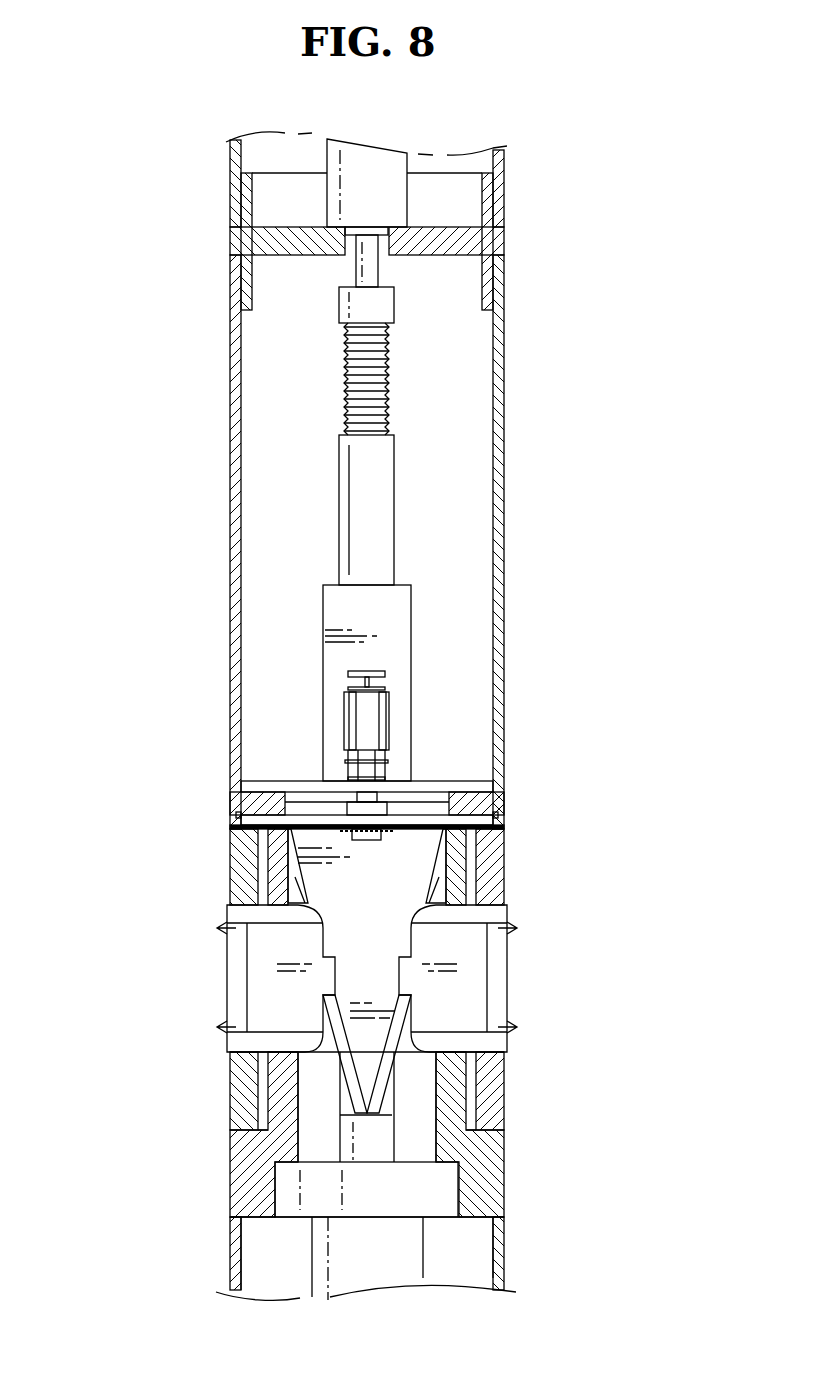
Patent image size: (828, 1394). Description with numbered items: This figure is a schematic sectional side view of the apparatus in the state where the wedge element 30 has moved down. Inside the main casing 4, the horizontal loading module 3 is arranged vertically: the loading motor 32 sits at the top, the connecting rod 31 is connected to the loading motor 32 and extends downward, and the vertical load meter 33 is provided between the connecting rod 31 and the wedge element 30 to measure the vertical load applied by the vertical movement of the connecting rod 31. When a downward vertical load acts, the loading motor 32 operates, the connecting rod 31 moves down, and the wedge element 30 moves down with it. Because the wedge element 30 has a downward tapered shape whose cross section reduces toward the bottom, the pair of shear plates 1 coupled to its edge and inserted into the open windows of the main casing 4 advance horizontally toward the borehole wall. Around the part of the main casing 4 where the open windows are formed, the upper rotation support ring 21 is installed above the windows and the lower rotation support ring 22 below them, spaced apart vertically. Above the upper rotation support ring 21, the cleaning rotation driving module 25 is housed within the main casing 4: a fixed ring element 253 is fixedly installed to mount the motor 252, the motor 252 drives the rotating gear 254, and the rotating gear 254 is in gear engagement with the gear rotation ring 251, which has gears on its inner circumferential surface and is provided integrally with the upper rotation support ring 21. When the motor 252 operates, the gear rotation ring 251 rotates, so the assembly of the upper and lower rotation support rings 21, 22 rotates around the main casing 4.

The shear plate 1 is at (236, 975).
The horizontal loading module 3 is at (122, 845).
The main casing 4 is at (500, 475).
The upper rotation support ring 21 is at (232, 880).
The lower rotation support ring 22 is at (238, 1085).
The cleaning rotation driving module 25 is at (606, 670).
The wedge element 30 is at (290, 850).
The connecting rod 31 is at (349, 474).
The loading motor 32 is at (340, 183).
The vertical load meter 33 is at (333, 650).
The gear rotation ring 251 is at (480, 820).
The motor 252 is at (385, 715).
The fixed ring element 253 is at (460, 783).
The rotating gear 254 is at (388, 830).